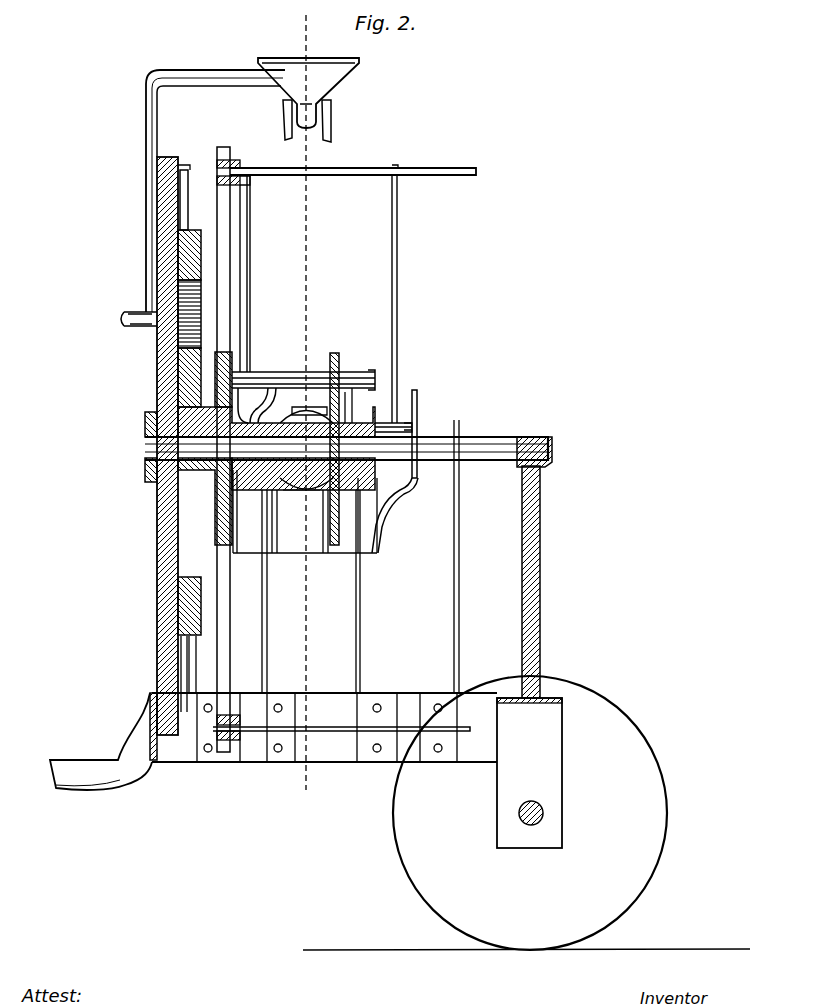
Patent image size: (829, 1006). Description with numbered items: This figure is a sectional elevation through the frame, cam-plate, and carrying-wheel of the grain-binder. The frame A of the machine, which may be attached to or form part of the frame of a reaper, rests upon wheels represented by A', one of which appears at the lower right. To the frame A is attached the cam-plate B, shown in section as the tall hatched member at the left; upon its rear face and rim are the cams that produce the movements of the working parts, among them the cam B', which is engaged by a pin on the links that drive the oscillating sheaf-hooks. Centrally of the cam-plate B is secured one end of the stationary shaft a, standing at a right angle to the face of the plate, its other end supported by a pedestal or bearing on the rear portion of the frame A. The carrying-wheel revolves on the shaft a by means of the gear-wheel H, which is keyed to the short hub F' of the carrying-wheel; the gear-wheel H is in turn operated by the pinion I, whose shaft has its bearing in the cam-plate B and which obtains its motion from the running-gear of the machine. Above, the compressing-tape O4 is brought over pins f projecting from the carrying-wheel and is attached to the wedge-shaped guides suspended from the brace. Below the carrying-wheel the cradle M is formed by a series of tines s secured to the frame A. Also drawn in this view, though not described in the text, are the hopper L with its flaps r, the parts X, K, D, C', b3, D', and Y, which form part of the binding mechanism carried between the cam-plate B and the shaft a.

The hopper funnel L is at (240, 192).
The funnel flaps r is at (285, 116).
The cam-plate B is at (159, 449).
The cam B' is at (190, 190).
The bearing block X is at (189, 247).
The pinion I is at (193, 314).
The gear-wheel H is at (205, 377).
The short hub F' is at (233, 439).
The pins f is at (353, 162).
The compressing-tape O4 is at (327, 299).
The plunger bar K is at (341, 355).
The disk ring D is at (333, 438).
The plate C' is at (393, 418).
The pin b3 is at (418, 420).
The stationary shaft a is at (353, 476).
The lower disk parts D' is at (325, 511).
The tines s is at (324, 566).
The clamp block Y is at (177, 612).
The cradle M is at (324, 707).
The frame A is at (306, 642).
The wheels A' is at (526, 813).